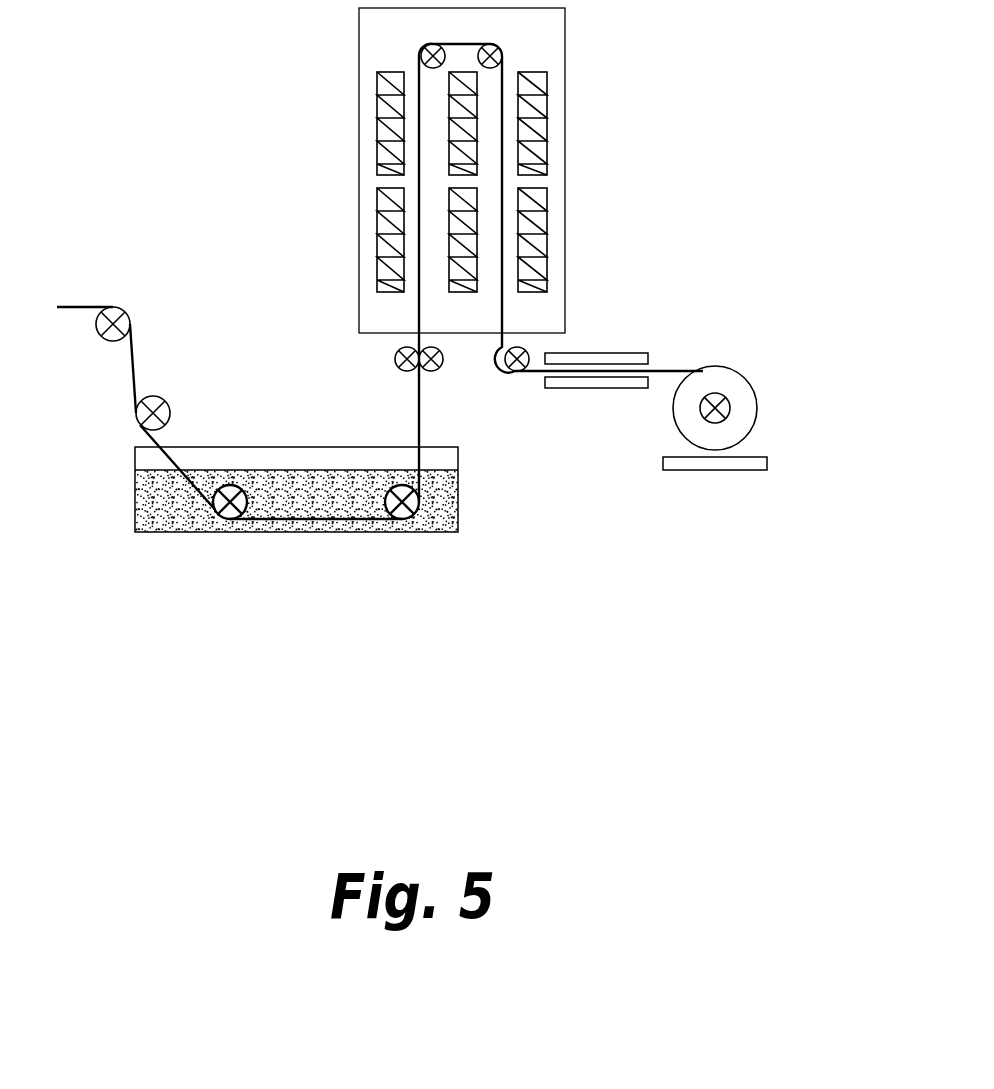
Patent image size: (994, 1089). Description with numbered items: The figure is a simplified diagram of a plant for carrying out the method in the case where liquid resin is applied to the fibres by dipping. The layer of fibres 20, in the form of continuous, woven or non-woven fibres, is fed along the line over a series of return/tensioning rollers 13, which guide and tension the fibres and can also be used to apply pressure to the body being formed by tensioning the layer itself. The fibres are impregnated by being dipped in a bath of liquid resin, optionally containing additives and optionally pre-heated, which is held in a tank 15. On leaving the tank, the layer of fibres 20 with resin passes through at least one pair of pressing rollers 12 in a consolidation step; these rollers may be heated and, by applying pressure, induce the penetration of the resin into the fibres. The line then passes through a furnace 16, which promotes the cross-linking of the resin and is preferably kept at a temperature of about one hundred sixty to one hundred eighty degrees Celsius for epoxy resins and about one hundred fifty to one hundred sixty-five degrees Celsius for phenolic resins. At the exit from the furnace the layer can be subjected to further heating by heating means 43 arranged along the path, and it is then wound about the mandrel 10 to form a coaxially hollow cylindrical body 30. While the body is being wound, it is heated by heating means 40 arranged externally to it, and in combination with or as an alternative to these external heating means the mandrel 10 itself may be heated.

The mandrel 10 is at (730, 412).
The pressing rollers 12 is at (388, 359).
The return/tensioning rollers 13 is at (102, 337).
The tank 15 is at (149, 532).
The furnace 16 is at (565, 140).
The layer of fibres 20 is at (135, 363).
The hollow cylindrical body 30 is at (733, 385).
The heating means 40 is at (708, 480).
The heating means 43 is at (605, 340).